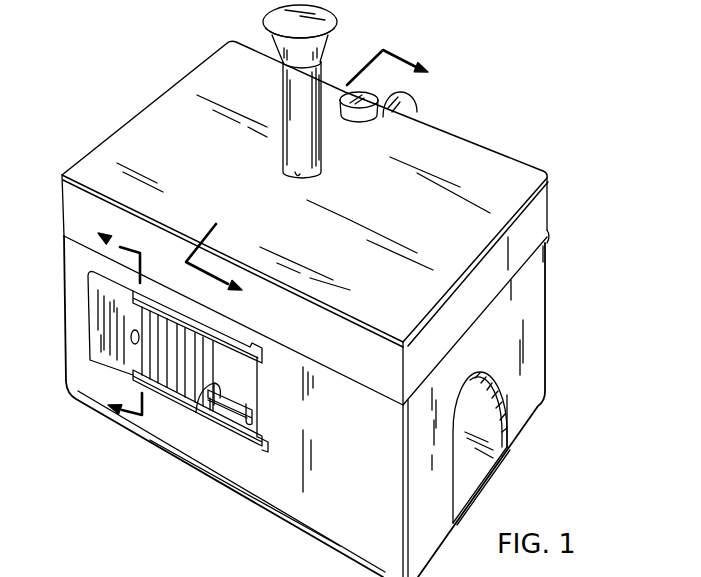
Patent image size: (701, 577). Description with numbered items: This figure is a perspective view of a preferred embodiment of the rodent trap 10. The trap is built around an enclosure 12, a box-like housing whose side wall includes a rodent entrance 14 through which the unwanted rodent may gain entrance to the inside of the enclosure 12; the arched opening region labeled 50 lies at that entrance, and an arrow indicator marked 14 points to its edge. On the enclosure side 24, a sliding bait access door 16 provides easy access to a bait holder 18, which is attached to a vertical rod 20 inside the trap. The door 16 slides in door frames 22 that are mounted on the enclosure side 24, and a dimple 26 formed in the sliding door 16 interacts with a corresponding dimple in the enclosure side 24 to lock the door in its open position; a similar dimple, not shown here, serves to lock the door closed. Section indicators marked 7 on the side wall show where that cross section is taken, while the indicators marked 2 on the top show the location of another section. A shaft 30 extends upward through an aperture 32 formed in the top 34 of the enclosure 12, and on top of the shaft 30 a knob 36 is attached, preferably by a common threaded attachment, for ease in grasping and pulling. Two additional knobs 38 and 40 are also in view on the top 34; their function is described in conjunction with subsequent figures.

The rodent trap 10 is at (524, 137).
The enclosure 12 is at (532, 288).
The rodent entrance 14 is at (522, 461).
The sliding bait access door 16 is at (97, 318).
The bait holder 18 is at (240, 398).
The vertical rod 20 is at (213, 383).
The door frames 22 is at (253, 352).
The enclosure side 24 is at (273, 498).
The dimple 26 is at (131, 338).
The shaft 30 is at (296, 137).
The aperture 32 is at (297, 176).
The top 34 is at (447, 147).
The knob 36 is at (336, 22).
The knob 38 is at (413, 103).
The knob 40 is at (362, 116).
The arched opening 50 is at (465, 477).
The section line 2- 2 is at (307, 164).
The section line 7- 7 is at (113, 313).